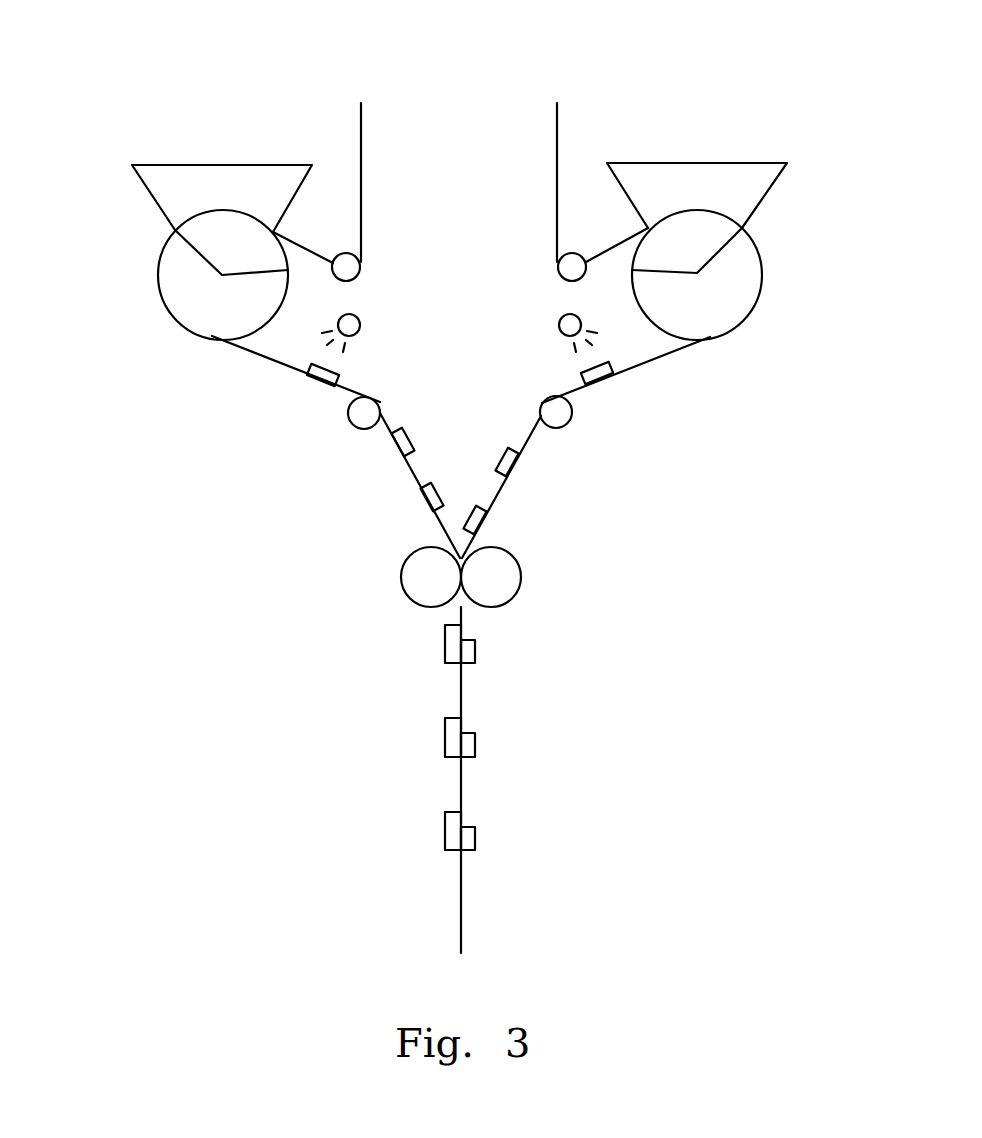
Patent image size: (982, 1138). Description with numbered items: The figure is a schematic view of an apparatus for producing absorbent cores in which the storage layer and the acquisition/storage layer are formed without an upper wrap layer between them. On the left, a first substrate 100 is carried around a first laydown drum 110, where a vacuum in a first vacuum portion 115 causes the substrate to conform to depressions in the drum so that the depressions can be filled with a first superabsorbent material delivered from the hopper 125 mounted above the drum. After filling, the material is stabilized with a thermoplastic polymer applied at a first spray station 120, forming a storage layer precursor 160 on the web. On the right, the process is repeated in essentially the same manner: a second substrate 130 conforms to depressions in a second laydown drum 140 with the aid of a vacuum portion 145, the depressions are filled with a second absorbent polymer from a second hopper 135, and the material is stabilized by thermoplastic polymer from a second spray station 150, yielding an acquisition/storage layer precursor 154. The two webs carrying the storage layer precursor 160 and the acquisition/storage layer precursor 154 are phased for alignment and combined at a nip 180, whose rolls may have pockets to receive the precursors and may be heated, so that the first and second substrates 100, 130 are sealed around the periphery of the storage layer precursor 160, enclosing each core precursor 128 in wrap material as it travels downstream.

The first substrate 100 is at (359, 123).
The first laydown drum 110 is at (178, 292).
The first vacuum portion 115 is at (193, 248).
The first spray station 120 is at (349, 325).
The first hopper 125 is at (222, 163).
The core precursor 128 is at (467, 653).
The second substrate 130 is at (557, 137).
The second hopper 135 is at (697, 163).
The second laydown drum 140 is at (727, 307).
The second coating composition 145 is at (717, 245).
The second spray station 150 is at (570, 325).
The acquisition/storage layer precursor 154 is at (474, 523).
The storage layer precursor 160 is at (423, 493).
The nip 180 is at (490, 582).